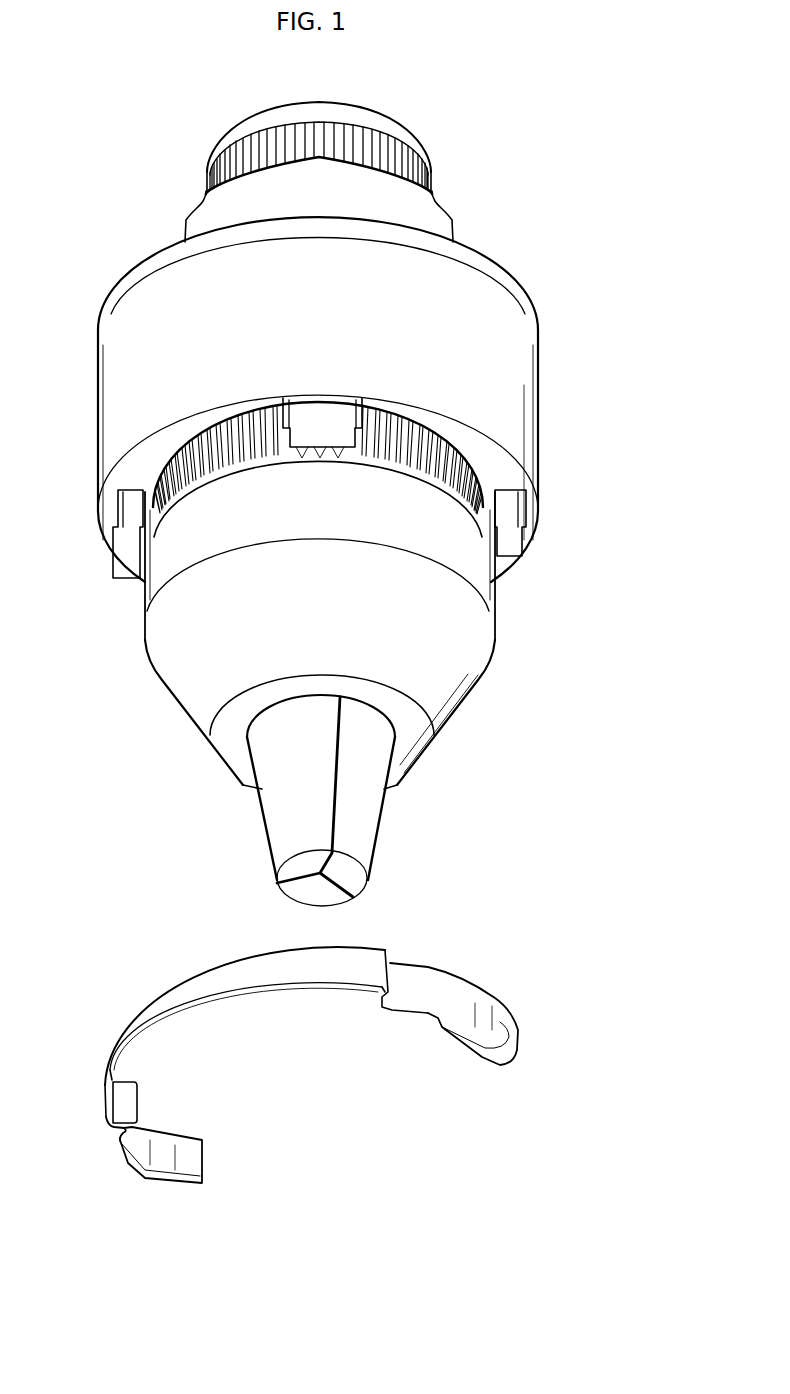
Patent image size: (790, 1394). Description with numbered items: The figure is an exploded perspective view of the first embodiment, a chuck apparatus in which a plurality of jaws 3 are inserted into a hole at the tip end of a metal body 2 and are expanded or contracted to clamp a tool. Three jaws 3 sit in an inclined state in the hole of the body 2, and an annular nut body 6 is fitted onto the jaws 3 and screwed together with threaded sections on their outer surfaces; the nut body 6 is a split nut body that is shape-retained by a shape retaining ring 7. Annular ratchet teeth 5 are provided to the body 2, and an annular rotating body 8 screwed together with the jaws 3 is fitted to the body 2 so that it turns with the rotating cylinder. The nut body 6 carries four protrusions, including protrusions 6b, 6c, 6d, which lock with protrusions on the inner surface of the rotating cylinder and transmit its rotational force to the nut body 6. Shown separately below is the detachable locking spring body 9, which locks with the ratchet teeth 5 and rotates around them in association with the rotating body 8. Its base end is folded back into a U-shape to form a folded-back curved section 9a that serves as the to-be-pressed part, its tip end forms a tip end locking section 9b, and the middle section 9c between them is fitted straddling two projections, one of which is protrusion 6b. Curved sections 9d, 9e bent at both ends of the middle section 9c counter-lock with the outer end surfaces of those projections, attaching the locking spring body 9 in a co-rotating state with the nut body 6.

The body 2 is at (192, 672).
The jaws 3 is at (280, 837).
The ratchet teeth 5 is at (240, 440).
The nut body 6 is at (150, 470).
The protrusion 6b is at (328, 412).
The protrusion 6c is at (540, 530).
The protrusion 6d is at (118, 546).
The shape retaining ring 7 is at (520, 372).
The rotating body 8 is at (545, 425).
The locking spring body 9 is at (318, 1078).
The folded-back curved section 9a is at (502, 1073).
The tip end locking section 9b is at (175, 1185).
The middle section 9c is at (258, 997).
The curved section 9d is at (380, 1010).
The curved section 9e is at (144, 1097).